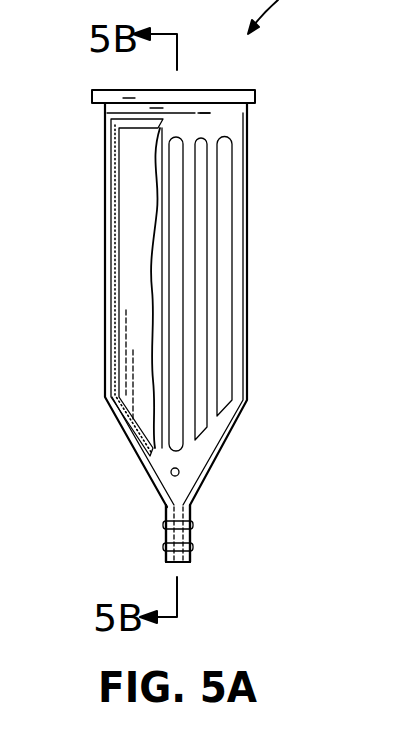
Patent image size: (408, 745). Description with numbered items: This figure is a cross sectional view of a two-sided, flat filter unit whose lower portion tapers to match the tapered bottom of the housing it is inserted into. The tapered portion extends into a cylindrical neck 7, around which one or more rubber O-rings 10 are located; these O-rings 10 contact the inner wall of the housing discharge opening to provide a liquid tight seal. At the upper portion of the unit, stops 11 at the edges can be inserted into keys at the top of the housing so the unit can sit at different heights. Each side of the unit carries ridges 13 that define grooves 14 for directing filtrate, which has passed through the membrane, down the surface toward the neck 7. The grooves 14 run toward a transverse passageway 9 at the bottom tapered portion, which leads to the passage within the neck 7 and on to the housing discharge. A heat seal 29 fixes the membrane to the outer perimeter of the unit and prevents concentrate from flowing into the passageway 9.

The neck 7 is at (192, 534).
The transverse passageway 9 is at (180, 468).
The O-rings 10 is at (191, 525).
The stops 11 is at (256, 98).
The ridges 13 is at (212, 180).
The grooves 14 is at (198, 252).
The heat seal 29 is at (112, 204).